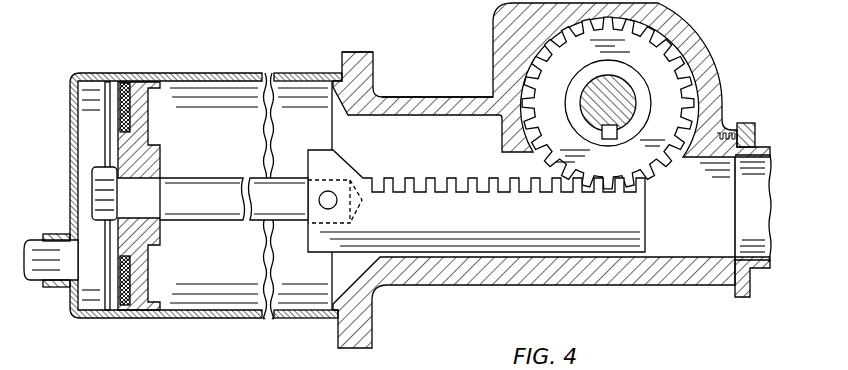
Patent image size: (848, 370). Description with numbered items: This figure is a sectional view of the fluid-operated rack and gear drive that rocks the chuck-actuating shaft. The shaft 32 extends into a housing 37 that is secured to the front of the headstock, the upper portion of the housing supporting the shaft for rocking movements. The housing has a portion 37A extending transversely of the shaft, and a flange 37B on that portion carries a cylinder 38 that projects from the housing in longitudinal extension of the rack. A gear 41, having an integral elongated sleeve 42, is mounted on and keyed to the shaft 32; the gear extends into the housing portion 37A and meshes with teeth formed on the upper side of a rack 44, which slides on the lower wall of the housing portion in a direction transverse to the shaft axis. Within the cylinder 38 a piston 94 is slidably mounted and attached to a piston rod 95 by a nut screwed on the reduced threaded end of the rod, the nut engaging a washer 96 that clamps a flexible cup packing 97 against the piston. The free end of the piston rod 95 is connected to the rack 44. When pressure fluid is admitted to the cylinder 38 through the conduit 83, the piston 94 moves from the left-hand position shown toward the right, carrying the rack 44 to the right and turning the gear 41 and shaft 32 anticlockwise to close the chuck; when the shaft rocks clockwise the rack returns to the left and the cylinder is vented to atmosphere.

The cylinder 38 is at (230, 78).
The housing 37 is at (688, 23).
The housing portion 37A is at (395, 100).
The flange 37B is at (362, 55).
The gear 41 is at (639, 103).
The elongated sleeve 42 is at (583, 87).
The shaft 32 is at (636, 108).
The rack 44 is at (529, 219).
The piston 94 is at (162, 153).
The piston rod 95 is at (205, 180).
The washer 96 is at (117, 152).
The flexible cup packing 97 is at (130, 92).
The conduit 83 is at (18, 240).